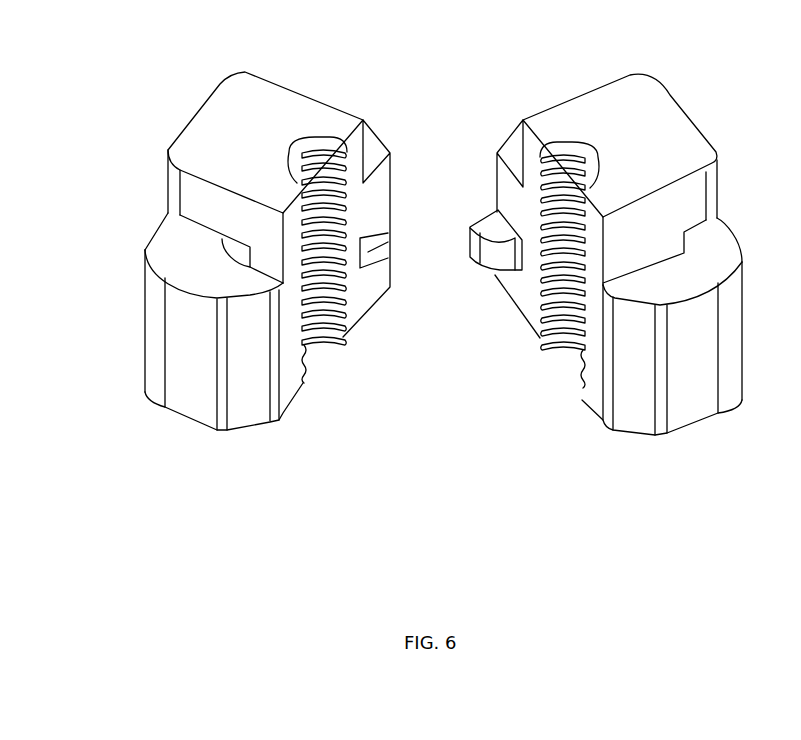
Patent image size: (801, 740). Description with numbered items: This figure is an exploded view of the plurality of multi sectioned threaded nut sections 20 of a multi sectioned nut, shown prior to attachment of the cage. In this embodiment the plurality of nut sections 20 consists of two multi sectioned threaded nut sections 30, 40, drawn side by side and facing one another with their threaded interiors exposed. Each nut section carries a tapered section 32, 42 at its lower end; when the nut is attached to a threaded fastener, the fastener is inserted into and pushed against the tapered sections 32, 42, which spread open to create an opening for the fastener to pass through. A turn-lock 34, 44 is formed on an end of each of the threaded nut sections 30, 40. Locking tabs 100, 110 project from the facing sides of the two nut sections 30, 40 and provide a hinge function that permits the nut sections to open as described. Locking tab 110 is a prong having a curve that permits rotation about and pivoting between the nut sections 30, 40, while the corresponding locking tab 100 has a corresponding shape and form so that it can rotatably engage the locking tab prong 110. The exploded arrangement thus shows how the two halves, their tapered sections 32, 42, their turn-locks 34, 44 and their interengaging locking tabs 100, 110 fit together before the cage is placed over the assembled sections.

The plurality of multi sectioned threaded nut sections 20 is at (440, 512).
The multi sectioned threaded nut section 30 is at (642, 137).
The tapered section 32 is at (633, 418).
The turn-lock 34 is at (685, 205).
The multi sectioned threaded nut section 40 is at (250, 132).
The tapered section 42 is at (243, 412).
The turn-lock 44 is at (197, 200).
The locking tab 100 is at (368, 248).
The locking tab 110 is at (478, 262).